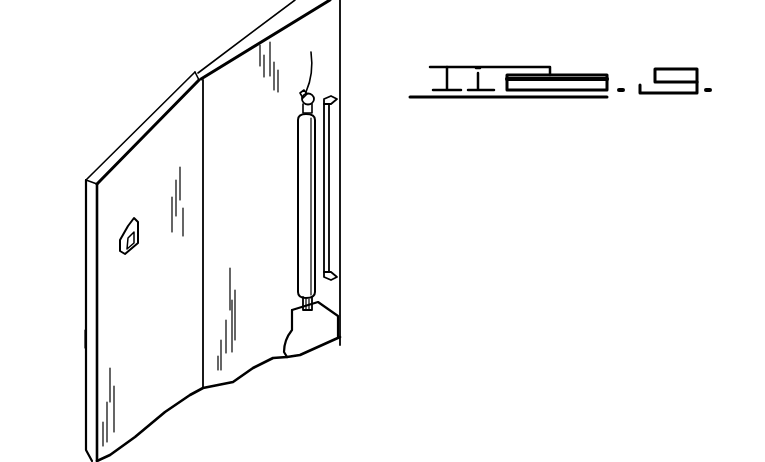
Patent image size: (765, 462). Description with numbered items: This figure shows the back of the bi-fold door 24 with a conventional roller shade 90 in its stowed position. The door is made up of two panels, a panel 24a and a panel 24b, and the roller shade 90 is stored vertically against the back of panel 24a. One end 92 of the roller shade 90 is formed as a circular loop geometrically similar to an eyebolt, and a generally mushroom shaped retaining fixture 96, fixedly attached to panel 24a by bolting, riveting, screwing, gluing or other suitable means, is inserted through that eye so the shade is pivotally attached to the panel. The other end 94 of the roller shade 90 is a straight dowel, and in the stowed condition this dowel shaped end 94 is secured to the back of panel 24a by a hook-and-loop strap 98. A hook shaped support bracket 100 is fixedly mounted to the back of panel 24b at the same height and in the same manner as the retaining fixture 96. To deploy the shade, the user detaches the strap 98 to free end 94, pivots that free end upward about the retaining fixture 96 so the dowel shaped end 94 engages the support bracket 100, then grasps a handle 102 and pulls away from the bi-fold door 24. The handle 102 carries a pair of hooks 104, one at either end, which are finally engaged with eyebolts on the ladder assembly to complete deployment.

The bi-fold door 24 is at (136, 113).
The panel 24a is at (277, 236).
The panel 24b is at (170, 346).
The roller shade 90 is at (296, 168).
The end of roller shade 92 is at (302, 106).
The end of roller shade 94 is at (316, 308).
The retaining fixture 96 is at (308, 60).
The hook-and-loop strap 98 is at (291, 334).
The hook shaped support bracket 100 is at (120, 243).
The handle 102 is at (328, 162).
The hooks 104 is at (333, 98).